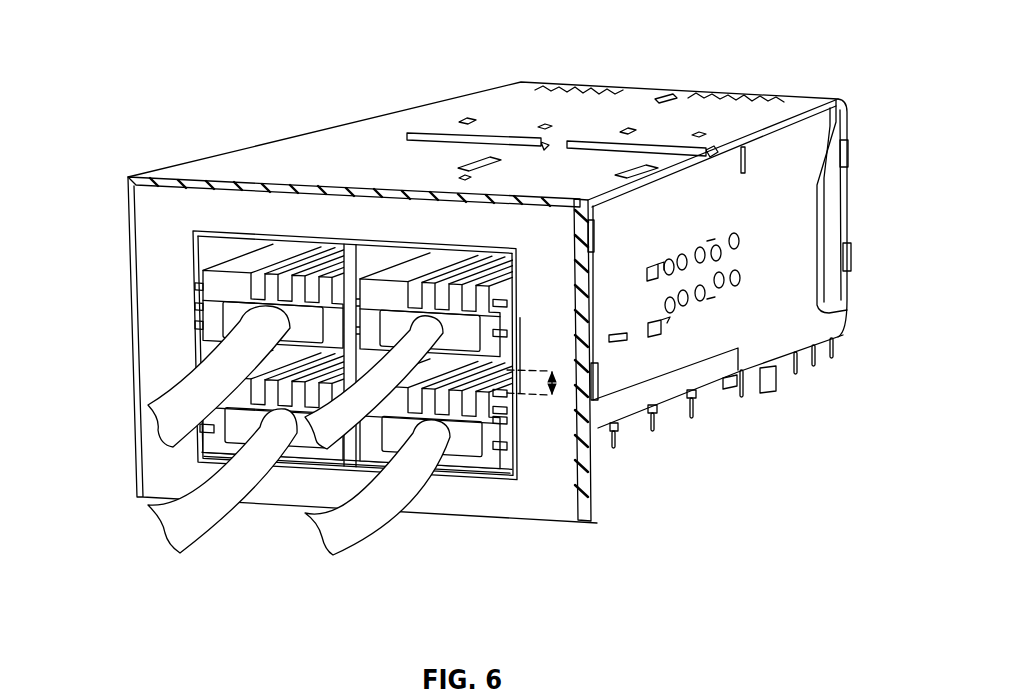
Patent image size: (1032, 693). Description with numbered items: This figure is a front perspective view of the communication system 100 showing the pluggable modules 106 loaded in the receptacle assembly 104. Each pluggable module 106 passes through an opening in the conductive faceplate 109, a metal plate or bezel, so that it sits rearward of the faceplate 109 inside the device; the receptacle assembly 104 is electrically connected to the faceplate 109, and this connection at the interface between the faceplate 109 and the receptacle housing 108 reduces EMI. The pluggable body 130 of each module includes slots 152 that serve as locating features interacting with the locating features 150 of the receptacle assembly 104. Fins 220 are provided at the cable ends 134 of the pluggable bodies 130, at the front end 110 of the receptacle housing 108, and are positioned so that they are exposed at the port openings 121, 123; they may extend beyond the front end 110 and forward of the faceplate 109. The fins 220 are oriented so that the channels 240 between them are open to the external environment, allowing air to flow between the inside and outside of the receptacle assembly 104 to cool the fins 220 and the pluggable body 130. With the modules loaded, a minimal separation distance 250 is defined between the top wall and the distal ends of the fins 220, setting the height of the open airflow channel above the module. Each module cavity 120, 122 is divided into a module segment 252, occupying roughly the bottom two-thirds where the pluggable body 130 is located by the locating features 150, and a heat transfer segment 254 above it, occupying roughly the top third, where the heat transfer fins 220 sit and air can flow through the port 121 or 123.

The communication system 100 is at (211, 46).
The receptacle assembly 104 is at (659, 66).
The pluggable module 106 is at (196, 340).
The receptacle housing 108 is at (775, 215).
The faceplate 109 is at (127, 232).
The front end 110 is at (283, 469).
The module cavity 120 is at (201, 439).
The port opening 121 is at (456, 470).
The module cavity 122 is at (197, 327).
The port opening 123 is at (436, 354).
The pluggable body 130 is at (347, 275).
The cable end 134 is at (202, 311).
The locating feature 150 is at (510, 448).
The slot 152 is at (501, 454).
The fin 220 is at (245, 278).
The channel 240 is at (226, 272).
The separation distance 250 is at (556, 386).
The module segment 252 is at (359, 356).
The heat transfer segment 254 is at (355, 355).